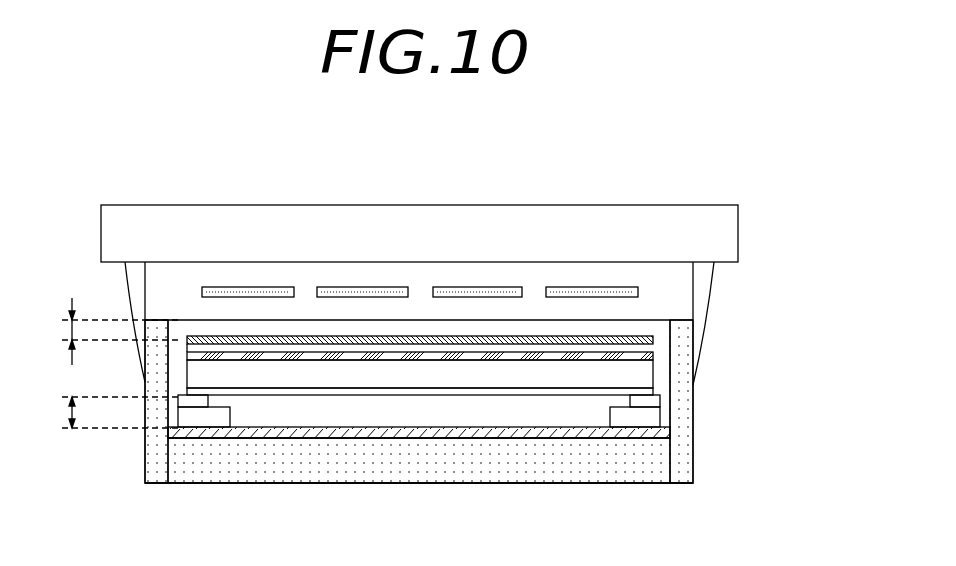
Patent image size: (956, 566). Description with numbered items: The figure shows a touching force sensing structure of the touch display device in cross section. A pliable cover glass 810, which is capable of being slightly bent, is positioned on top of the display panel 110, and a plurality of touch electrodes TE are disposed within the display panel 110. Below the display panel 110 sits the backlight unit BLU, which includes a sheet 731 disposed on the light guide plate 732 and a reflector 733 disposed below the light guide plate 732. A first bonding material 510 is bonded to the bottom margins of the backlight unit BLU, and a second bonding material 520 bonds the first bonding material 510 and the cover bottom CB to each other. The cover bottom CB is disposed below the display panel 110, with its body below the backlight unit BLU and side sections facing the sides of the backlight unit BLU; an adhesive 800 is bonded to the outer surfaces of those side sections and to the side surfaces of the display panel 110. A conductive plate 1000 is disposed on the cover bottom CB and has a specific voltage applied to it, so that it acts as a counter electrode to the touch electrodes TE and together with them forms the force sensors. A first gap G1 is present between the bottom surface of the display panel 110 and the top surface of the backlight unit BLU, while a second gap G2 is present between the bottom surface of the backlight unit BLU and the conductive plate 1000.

The cover glass 810 is at (738, 233).
The display panel 110 is at (155, 290).
The touch electrodes TE is at (638, 292).
The adhesive 800 is at (133, 353).
The cover bottom CB is at (567, 483).
The conductive plate 1000 is at (443, 438).
The backlight unit BLU is at (514, 381).
The sheet 731 is at (653, 337).
The light guide plate 732 is at (650, 373).
The reflector 733 is at (657, 392).
The first bonding material 510 is at (662, 402).
The second bonding material 520 is at (662, 418).
The first gap G1 is at (103, 331).
The second gap G2 is at (103, 412).